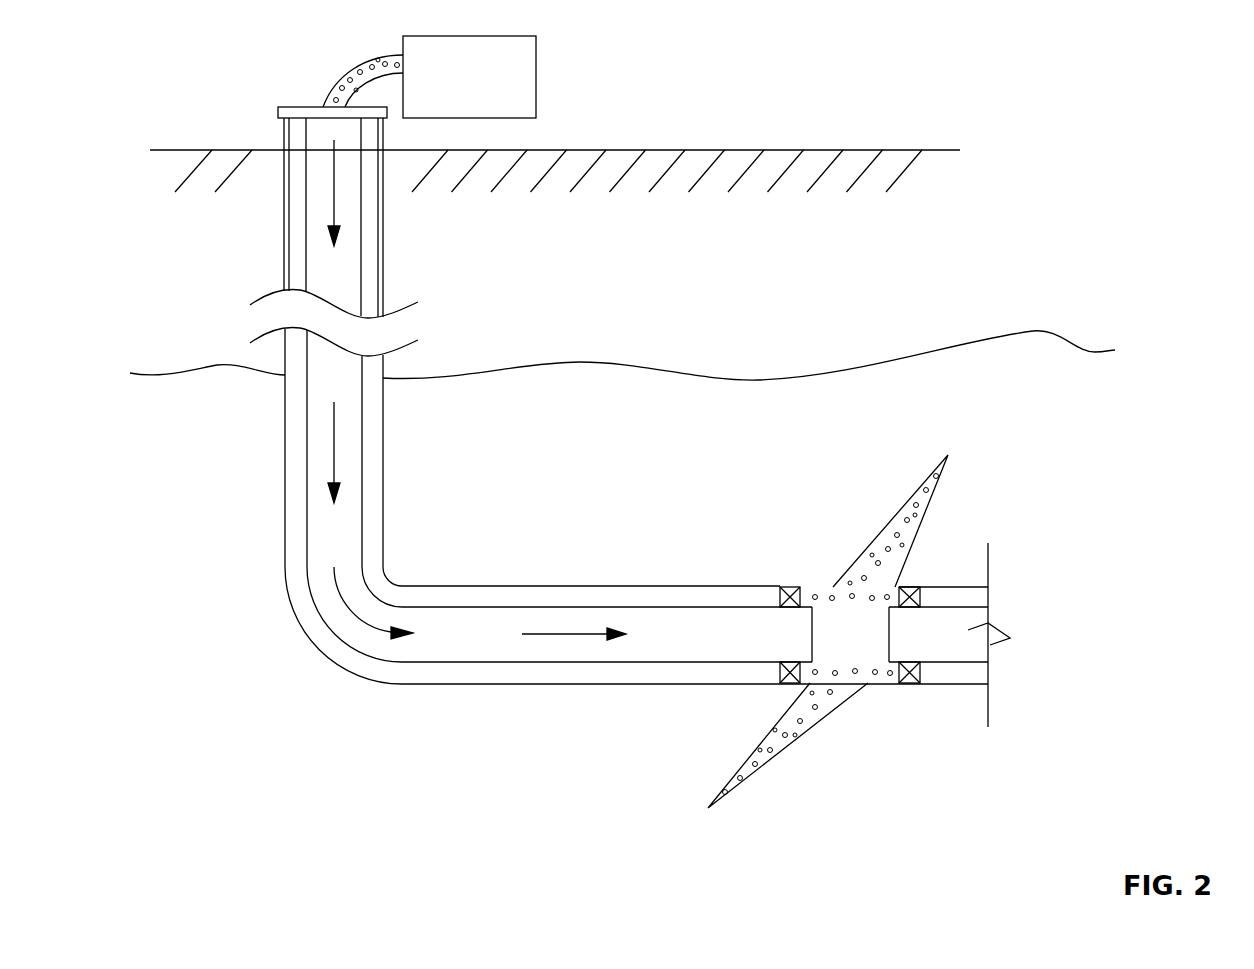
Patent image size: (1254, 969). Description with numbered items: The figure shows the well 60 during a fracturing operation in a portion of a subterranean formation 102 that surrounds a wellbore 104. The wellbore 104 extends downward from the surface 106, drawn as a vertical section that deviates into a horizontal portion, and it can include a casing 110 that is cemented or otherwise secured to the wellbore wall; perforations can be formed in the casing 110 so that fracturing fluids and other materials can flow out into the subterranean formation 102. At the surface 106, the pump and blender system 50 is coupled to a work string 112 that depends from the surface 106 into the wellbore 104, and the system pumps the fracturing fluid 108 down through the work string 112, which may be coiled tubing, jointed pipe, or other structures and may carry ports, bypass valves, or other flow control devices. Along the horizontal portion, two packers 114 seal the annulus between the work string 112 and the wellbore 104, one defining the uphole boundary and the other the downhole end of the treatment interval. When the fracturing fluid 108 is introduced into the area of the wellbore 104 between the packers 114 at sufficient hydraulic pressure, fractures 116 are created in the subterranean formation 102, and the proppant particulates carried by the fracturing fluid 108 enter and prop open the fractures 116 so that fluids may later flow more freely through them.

The pump and blender system 50 is at (467, 87).
The well 60 is at (297, 675).
The subterranean formation 102 is at (618, 412).
The wellbore 104 is at (300, 243).
The surface 106 is at (745, 150).
The fracturing fluid 108 is at (342, 78).
The casing 110 is at (288, 280).
The work string 112 is at (307, 497).
The packers 114 is at (792, 586).
The fractures 116 is at (872, 523).